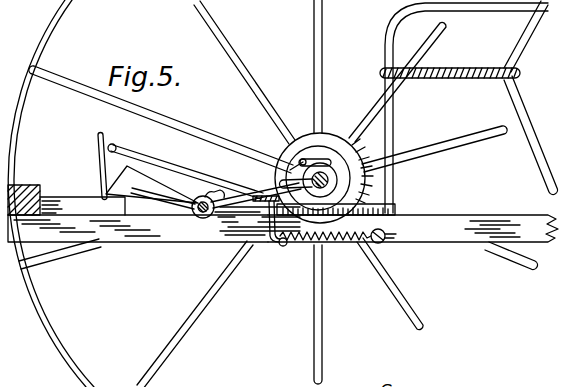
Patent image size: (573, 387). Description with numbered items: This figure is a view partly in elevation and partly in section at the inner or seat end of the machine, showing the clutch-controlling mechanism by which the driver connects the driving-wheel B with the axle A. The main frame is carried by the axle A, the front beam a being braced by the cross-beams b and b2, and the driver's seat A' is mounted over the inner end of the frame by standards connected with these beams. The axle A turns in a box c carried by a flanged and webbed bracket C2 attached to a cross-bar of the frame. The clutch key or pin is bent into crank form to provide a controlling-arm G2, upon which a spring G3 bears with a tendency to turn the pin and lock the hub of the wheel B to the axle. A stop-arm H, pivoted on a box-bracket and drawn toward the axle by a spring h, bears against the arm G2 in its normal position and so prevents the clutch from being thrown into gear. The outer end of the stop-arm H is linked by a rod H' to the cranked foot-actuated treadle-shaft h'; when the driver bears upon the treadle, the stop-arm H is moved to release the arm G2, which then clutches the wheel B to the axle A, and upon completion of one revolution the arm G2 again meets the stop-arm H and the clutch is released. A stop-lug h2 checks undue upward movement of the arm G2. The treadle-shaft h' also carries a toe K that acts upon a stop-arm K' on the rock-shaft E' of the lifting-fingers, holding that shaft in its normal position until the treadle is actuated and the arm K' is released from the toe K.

The driving-wheel B is at (70, 384).
The driver's seat A' is at (468, 107).
The front beam a is at (67, 180).
The cross-beam b2 is at (116, 229).
The cross-beam b is at (413, 228).
The axle A is at (338, 216).
The treadle shaft h' is at (93, 163).
The rod H' is at (185, 171).
The toe K is at (152, 184).
The stop-arm K' is at (163, 196).
The rock-shaft E' is at (200, 231).
The box bracket C2 is at (250, 180).
The stop-lug h2 is at (266, 183).
The spring h is at (305, 236).
The stop-arm H is at (257, 221).
The disc G is at (324, 166).
The axle box c is at (321, 175).
The spring G3 is at (295, 165).
The controlling-arm G2 is at (335, 210).